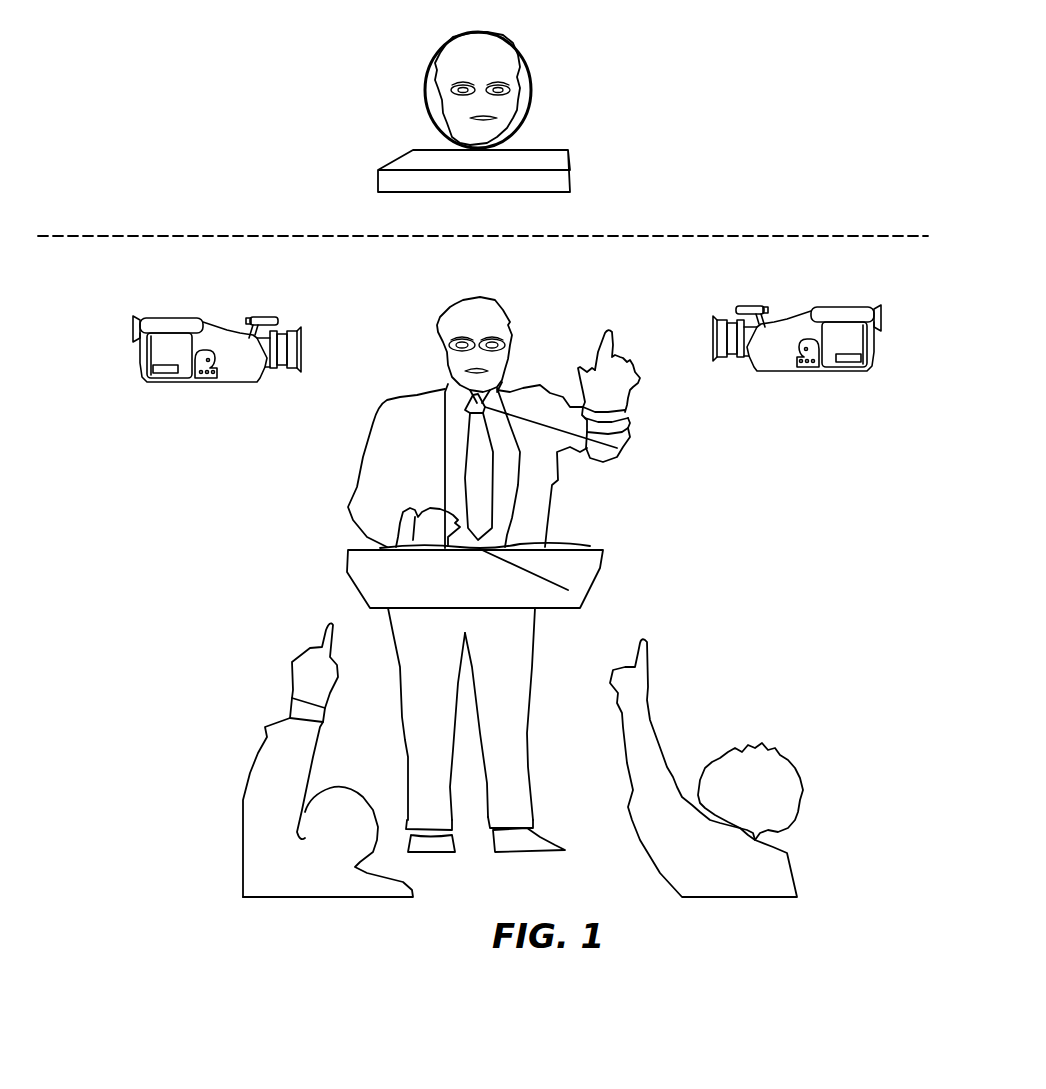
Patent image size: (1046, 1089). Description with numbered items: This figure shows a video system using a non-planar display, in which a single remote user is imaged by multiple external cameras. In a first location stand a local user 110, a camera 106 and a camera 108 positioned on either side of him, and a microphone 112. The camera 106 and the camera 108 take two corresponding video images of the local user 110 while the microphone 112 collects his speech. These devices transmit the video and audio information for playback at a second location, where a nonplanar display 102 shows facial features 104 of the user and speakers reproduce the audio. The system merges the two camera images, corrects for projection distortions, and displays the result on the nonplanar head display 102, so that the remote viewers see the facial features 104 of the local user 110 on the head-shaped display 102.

The nonplanar display 102 is at (455, 40).
The facial features 104 is at (503, 88).
The camera 106 is at (157, 318).
The camera 108 is at (843, 307).
The local user 110 is at (617, 448).
The microphone 112 is at (568, 590).